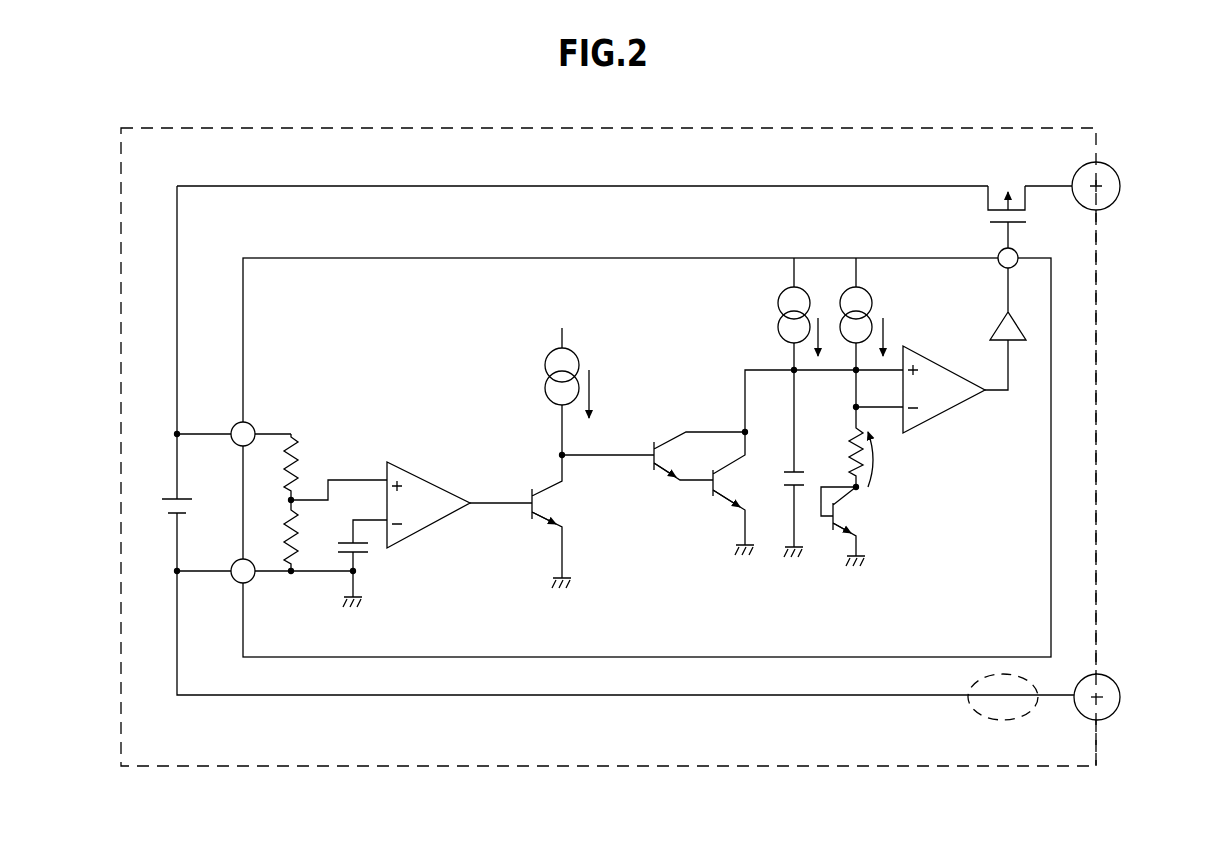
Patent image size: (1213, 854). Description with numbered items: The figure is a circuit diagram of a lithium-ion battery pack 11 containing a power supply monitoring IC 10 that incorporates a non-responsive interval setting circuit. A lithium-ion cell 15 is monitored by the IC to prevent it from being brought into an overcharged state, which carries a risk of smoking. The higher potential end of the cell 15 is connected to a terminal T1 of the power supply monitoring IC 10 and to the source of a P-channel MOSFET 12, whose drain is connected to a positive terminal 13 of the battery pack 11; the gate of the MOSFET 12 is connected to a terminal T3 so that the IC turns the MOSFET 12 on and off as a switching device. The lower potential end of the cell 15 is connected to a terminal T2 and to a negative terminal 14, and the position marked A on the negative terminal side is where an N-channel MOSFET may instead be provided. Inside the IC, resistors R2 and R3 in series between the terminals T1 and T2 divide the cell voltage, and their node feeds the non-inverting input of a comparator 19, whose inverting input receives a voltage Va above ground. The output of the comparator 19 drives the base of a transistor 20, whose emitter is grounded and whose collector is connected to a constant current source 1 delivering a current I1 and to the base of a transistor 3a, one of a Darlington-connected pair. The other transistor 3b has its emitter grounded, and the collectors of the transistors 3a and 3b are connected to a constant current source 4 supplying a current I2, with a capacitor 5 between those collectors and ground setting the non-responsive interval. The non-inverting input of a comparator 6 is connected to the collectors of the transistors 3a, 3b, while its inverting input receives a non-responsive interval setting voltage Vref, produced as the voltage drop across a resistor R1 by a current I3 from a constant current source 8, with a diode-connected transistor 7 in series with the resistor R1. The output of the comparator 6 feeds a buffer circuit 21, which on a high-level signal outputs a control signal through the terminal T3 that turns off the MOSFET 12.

The constant current source 1 is at (575, 352).
The transistor 3a is at (675, 426).
The transistor 3b is at (725, 478).
The constant current source 4 is at (780, 296).
The capacitor 5 is at (785, 495).
The comparator 6 is at (945, 417).
The diode-connected transistor 7 is at (858, 515).
The constant current source 8 is at (872, 299).
The power supply monitoring IC 10 is at (465, 660).
The battery pack 11 is at (320, 768).
The P-channel MOSFET 12 is at (1013, 183).
The positive terminal 13 is at (1117, 169).
The negative terminal 14 is at (1110, 680).
The lithium-ion cell 15 is at (160, 508).
The comparator 19 is at (420, 478).
The transistor 20 is at (537, 530).
The buffer circuit 21 is at (1012, 345).
The position for N-channel MOSFET A is at (988, 722).
The terminal T1 is at (225, 427).
The terminal T2 is at (225, 564).
The terminal T3 is at (1025, 250).
The resistor R1 is at (839, 447).
The resistor R2 is at (274, 467).
The resistor R3 is at (274, 535).
The current I1 is at (604, 394).
The current I2 is at (832, 312).
The current I3 is at (898, 331).
The voltage Va is at (367, 563).
The non-responsive interval setting voltage Vref is at (899, 459).